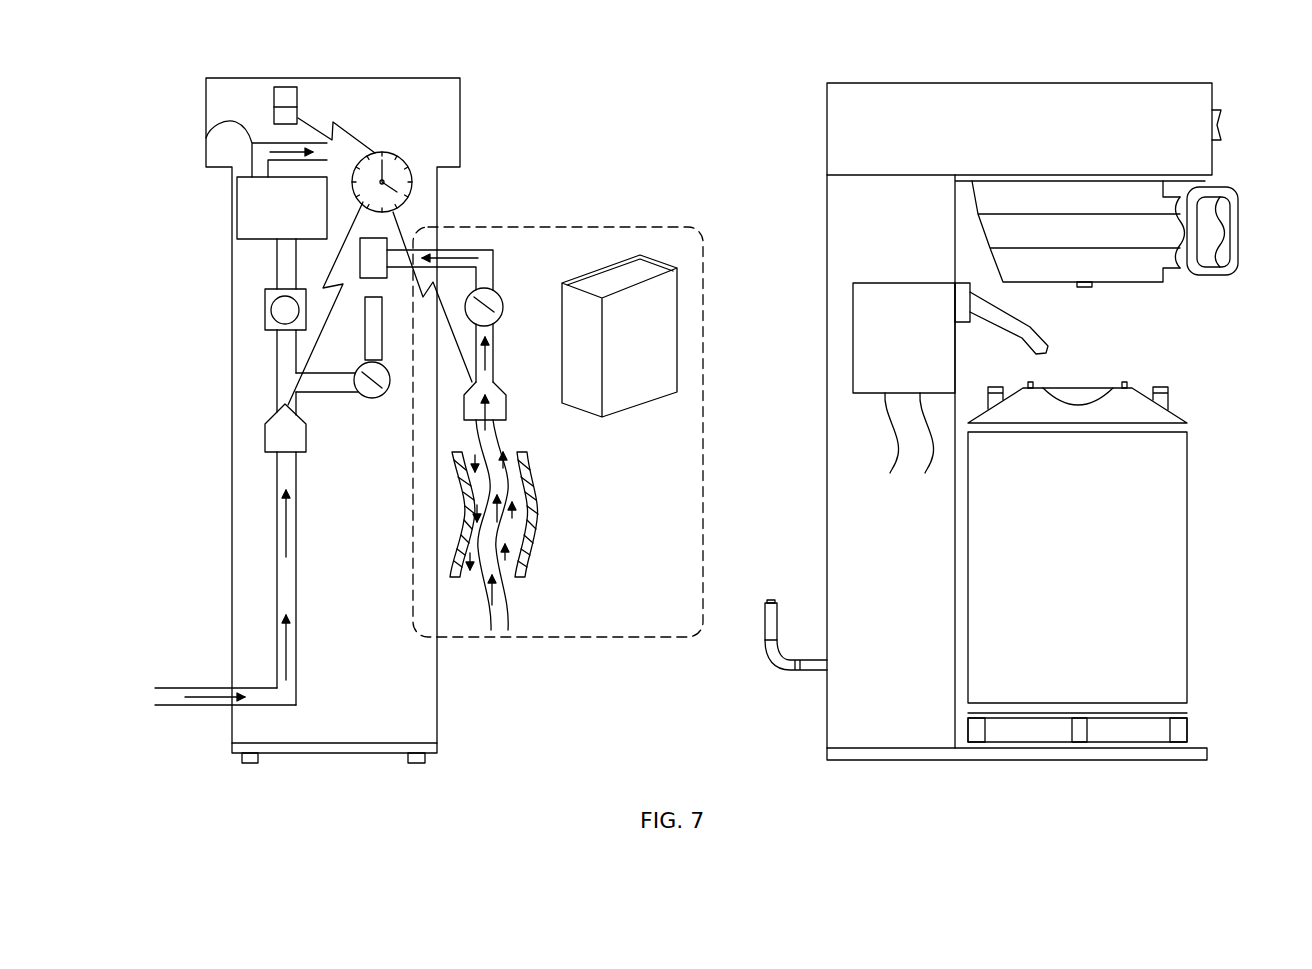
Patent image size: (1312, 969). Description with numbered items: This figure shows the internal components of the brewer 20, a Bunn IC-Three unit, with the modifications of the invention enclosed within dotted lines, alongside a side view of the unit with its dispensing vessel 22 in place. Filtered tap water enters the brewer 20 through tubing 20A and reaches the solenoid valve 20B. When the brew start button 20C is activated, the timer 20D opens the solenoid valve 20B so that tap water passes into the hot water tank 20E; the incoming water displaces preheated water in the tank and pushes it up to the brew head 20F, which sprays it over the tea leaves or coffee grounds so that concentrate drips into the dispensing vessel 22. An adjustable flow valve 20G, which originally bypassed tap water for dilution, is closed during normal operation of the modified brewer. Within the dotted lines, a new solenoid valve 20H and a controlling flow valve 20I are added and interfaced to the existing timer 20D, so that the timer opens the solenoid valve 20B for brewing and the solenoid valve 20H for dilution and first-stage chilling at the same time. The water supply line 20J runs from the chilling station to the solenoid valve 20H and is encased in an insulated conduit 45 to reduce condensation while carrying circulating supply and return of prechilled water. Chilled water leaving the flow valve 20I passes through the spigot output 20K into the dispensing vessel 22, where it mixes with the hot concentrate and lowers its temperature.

The brewer 20 is at (460, 125).
The tubing 20A is at (188, 688).
The solenoid valve 20B is at (265, 432).
The brew start button 20C is at (286, 87).
The timer 20D is at (383, 152).
The hot water tank 20E is at (237, 208).
The brew head 20F is at (206, 140).
The adjustable flow valve 20G is at (387, 398).
The solenoid valve 20H is at (500, 384).
The flow valve 20I is at (503, 297).
The water supply line 20J is at (508, 615).
The spigot output 20K is at (378, 238).
The dispensing vessel 22 is at (1187, 570).
The insulated conduit 45 is at (530, 520).